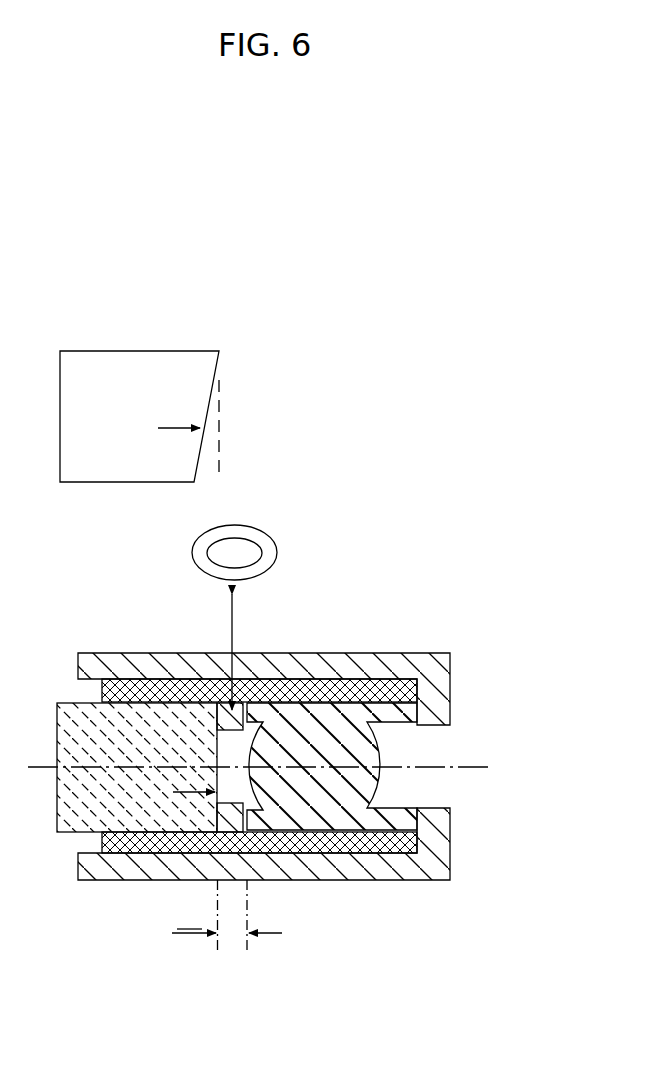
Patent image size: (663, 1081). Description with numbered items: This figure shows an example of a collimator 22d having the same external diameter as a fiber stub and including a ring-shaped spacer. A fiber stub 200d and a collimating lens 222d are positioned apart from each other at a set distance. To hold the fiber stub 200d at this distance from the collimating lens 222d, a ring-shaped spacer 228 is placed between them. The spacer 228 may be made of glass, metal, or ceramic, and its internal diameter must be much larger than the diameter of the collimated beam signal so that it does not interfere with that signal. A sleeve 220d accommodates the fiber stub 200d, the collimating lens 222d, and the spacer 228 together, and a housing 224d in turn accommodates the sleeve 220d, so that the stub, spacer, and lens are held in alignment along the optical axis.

The optical module 22d is at (334, 351).
The fiber stub 200d is at (125, 712).
The sleeve 220d is at (353, 690).
The collimating lens 222d is at (335, 793).
The housing 224d is at (440, 852).
The ring-shaped spacer 228 is at (268, 532).